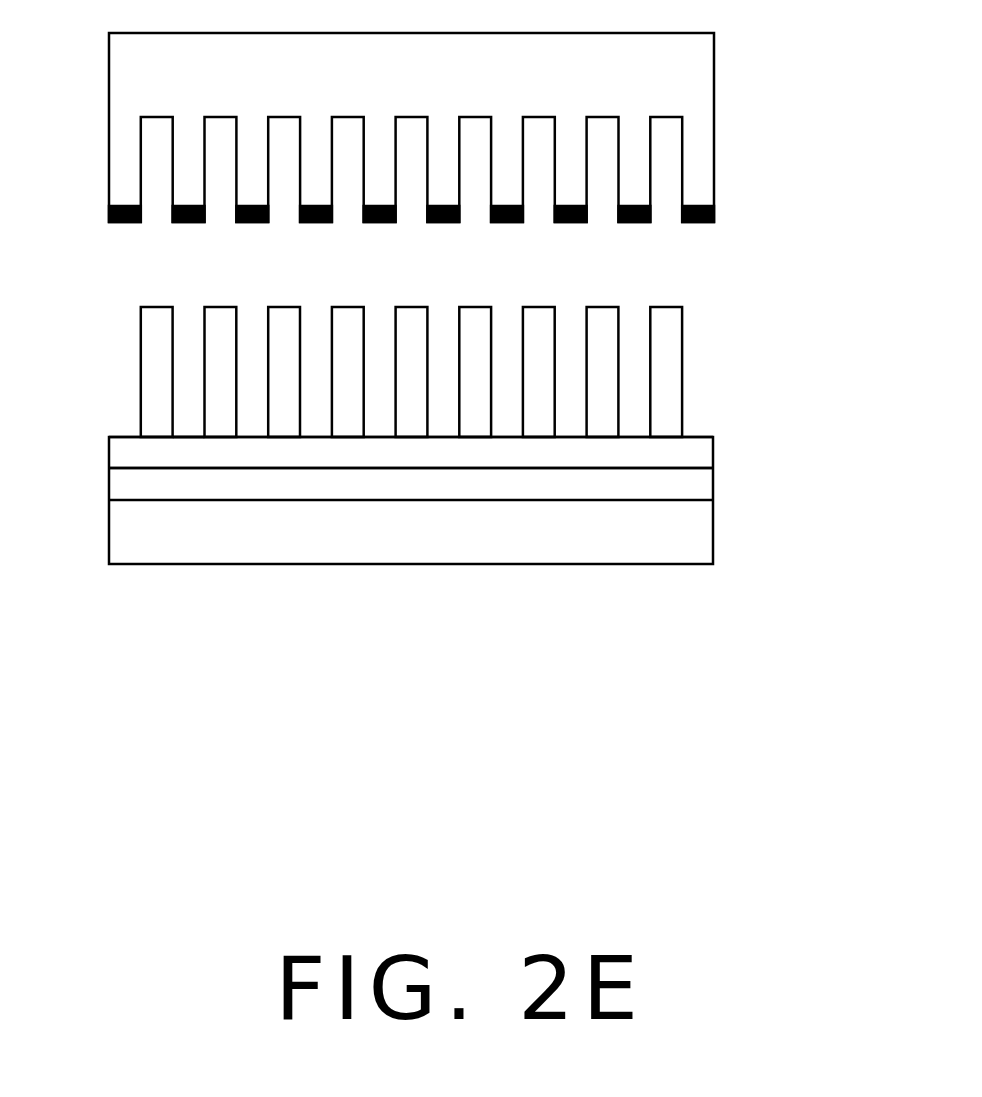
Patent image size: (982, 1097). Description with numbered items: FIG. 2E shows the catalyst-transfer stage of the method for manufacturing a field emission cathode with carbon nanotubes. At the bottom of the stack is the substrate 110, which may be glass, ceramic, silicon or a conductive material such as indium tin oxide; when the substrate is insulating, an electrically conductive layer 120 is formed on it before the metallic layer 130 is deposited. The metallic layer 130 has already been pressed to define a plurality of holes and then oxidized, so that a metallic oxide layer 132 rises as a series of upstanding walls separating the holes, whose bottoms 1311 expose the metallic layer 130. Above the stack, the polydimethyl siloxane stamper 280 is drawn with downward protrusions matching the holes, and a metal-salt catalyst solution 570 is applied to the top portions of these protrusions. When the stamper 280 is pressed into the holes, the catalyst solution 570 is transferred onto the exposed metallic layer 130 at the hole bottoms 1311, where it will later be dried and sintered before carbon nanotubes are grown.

The stamper 280 is at (692, 69).
The metal-salt catalyst solution 570 is at (714, 212).
The metallic oxide layer 132 is at (666, 360).
The bottoms of the holes 1311 is at (190, 420).
The metallic layer 130 is at (697, 458).
The electrically conductive layer 120 is at (692, 492).
The substrate 110 is at (552, 547).